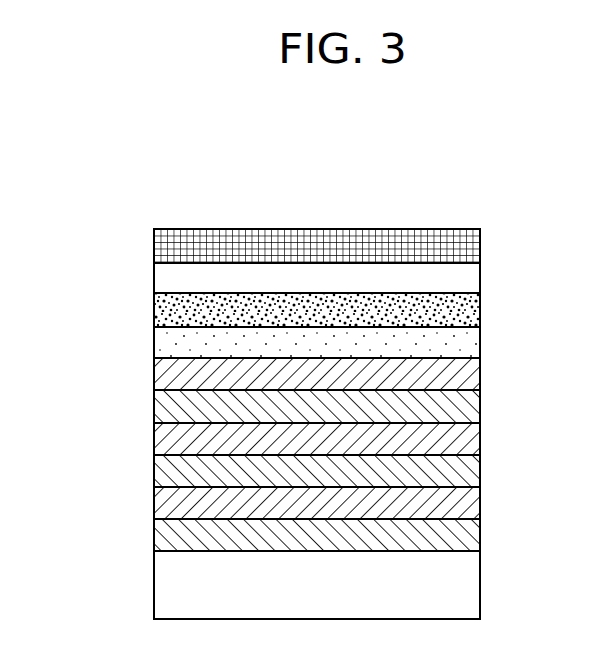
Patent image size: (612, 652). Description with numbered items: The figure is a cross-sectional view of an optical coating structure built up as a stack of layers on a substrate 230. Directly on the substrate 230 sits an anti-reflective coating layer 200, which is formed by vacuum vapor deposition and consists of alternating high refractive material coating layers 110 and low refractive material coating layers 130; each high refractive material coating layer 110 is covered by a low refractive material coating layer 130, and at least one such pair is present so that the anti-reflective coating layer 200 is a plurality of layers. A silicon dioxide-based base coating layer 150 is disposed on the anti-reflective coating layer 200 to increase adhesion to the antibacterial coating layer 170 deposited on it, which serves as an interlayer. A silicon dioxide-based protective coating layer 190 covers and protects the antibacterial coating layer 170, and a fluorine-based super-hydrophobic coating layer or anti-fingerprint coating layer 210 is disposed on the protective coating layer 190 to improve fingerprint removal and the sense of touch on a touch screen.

The super-hydrophobic coating layer or anti-fingerprint coating layer 210 is at (480, 247).
The protective coating layer 190 is at (476, 280).
The antibacterial coating layer 170 is at (478, 311).
The base coating layer 150 is at (478, 343).
The anti-reflective coating layer 200 is at (251, 454).
The low refractive material coating layer 130 is at (154, 376).
The high refractive material coating layer 110 is at (154, 408).
The substrate 230 is at (475, 583).